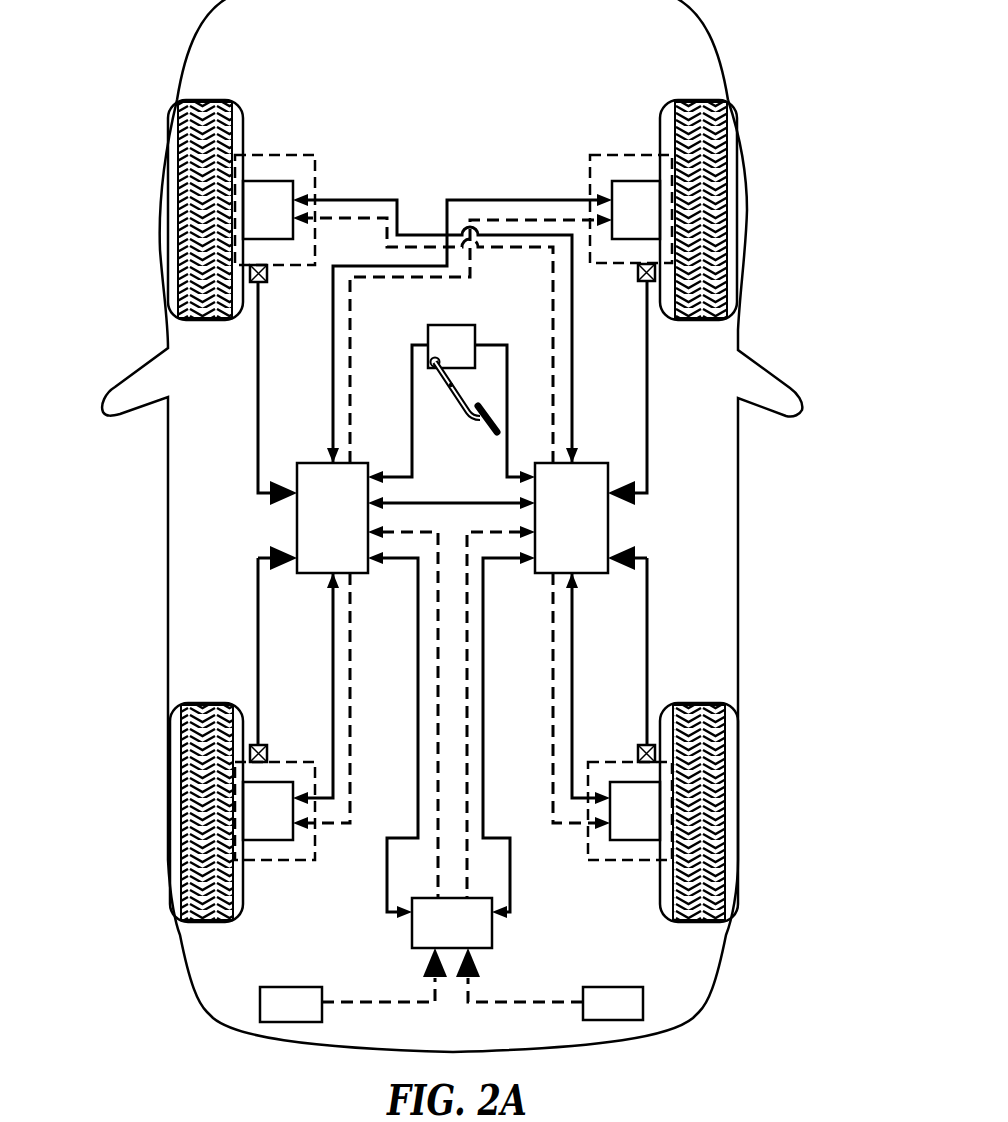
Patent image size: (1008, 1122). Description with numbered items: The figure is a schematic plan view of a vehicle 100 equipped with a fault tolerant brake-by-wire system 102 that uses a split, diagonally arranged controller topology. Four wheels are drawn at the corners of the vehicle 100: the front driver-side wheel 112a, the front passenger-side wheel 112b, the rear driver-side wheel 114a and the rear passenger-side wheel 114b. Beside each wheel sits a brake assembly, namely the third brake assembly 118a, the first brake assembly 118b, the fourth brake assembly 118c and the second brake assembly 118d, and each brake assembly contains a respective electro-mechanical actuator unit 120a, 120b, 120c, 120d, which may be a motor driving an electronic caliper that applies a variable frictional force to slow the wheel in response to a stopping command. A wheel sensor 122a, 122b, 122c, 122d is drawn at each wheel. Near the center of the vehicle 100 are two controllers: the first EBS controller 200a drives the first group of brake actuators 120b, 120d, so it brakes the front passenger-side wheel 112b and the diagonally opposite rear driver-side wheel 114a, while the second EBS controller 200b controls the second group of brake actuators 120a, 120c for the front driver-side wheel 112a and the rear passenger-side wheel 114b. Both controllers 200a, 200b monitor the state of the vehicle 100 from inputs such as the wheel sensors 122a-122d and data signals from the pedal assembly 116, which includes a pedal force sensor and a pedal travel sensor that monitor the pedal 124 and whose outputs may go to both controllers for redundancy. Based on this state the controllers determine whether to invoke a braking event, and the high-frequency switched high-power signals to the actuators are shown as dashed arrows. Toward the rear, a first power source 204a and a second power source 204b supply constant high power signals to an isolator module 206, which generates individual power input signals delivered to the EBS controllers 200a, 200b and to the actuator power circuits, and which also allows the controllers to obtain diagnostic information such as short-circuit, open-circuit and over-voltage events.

The vehicle 100 is at (744, 519).
The fault tolerant BBW system 102 is at (441, 105).
The third wheel 112a is at (153, 198).
The first wheel 112b is at (742, 198).
The second wheel 114a is at (160, 850).
The fourth wheel 114b is at (740, 853).
The pedal assembly 116 is at (458, 340).
The third brake assembly 118a is at (322, 175).
The first brake assembly 118b is at (585, 175).
The fourth brake assembly 118c is at (629, 865).
The second brake assembly 118d is at (276, 865).
The electro-mechanical actuator unit 120a is at (270, 190).
The electro-mechanical actuator unit 120b is at (633, 188).
The electro-mechanical actuator unit 120c is at (627, 825).
The electro-mechanical actuator unit 120d is at (277, 825).
The wheel sensor 122a is at (258, 282).
The wheel sensor 122b is at (648, 281).
The wheel sensor 122c is at (648, 745).
The wheel sensor 122d is at (257, 745).
The pedal 124 is at (447, 395).
The first EBS controller 200a is at (330, 508).
The second EBS controller 200b is at (575, 508).
The first power source 204a is at (293, 1002).
The second power source 204b is at (613, 1002).
The isolator module 206 is at (423, 937).